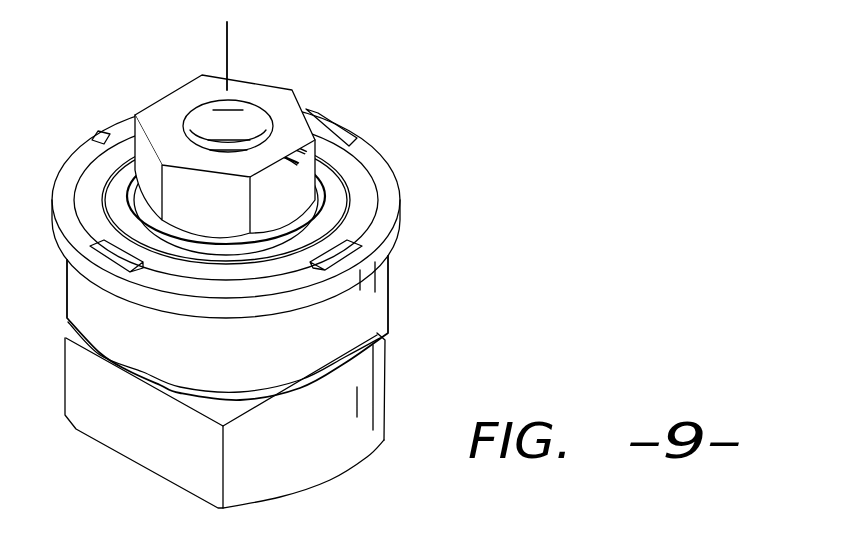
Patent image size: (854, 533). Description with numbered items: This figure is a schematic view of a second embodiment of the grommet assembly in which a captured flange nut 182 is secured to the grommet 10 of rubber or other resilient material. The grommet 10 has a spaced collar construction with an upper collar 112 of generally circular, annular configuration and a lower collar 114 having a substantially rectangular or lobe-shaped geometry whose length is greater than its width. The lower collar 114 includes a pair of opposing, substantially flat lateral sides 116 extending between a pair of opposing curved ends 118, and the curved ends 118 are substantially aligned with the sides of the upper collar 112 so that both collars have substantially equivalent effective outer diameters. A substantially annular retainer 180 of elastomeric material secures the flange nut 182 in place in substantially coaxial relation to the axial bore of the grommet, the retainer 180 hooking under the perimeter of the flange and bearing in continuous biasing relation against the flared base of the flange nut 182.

The grommet 10 is at (266, 254).
The upper collar 112 is at (388, 275).
The lower collar 114 is at (269, 414).
The flat lateral sides 116 is at (160, 433).
The curved ends 118 is at (320, 467).
The annular retainer 180 is at (366, 186).
The flange nut 182 is at (173, 110).